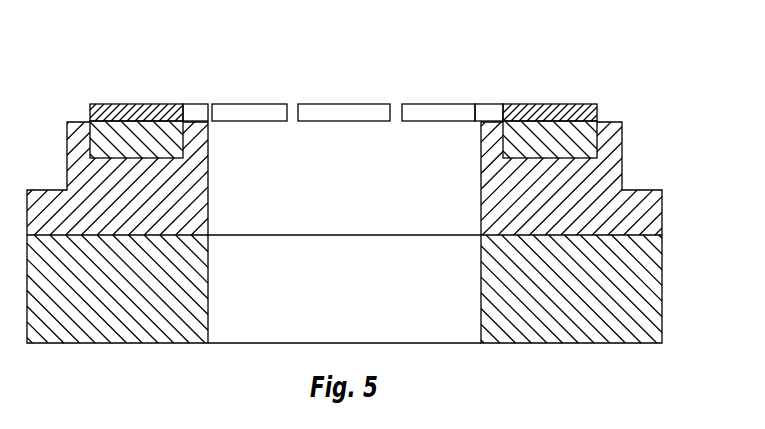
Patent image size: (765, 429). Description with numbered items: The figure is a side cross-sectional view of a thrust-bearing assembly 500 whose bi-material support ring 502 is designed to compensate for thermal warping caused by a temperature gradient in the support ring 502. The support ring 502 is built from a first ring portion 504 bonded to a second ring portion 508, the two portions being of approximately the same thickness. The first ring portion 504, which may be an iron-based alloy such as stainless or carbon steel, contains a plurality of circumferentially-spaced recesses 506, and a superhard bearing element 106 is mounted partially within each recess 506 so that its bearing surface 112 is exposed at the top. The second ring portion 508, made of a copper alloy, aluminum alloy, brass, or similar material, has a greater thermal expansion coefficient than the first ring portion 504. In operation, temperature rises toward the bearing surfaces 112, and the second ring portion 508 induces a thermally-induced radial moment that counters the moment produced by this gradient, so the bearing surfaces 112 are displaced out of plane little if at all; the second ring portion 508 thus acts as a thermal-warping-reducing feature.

The thrust-bearing assembly 500 is at (588, 45).
The bi-material support ring 502 is at (675, 208).
The first ring portion 504 is at (605, 184).
The recess 506 is at (600, 143).
The second ring portion 508 is at (642, 336).
The superhard bearing element 106 is at (600, 110).
The bearing surface 112 is at (553, 103).